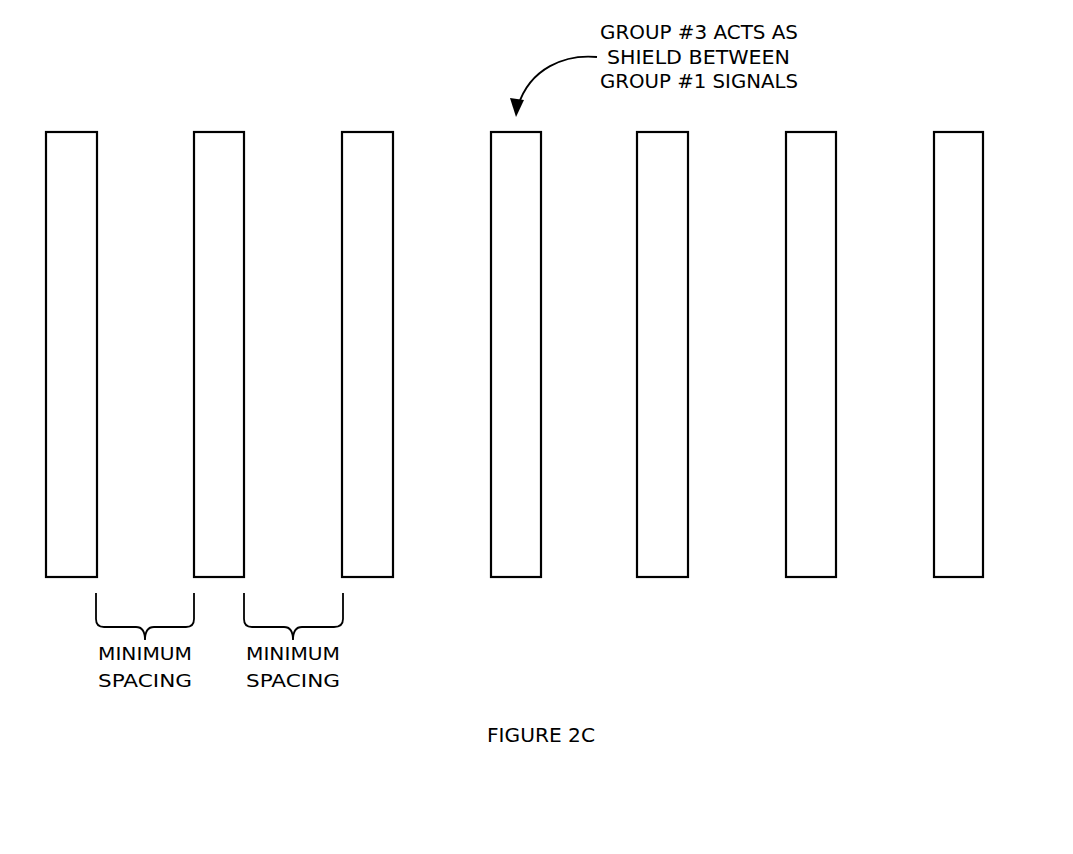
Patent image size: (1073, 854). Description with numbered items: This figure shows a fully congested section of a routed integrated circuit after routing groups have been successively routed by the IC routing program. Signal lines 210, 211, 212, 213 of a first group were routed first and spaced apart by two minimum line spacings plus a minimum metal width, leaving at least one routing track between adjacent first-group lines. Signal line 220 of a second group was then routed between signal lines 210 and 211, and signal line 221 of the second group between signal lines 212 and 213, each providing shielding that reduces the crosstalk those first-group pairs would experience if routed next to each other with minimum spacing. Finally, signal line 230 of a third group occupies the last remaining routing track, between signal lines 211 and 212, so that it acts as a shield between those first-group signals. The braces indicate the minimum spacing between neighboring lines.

The signal line of the first group 210 is at (97, 178).
The signal line of the second group 220 is at (244, 178).
The signal line of the first group 211 is at (393, 178).
The signal line of the third group 230 is at (541, 232).
The signal line of the first group 212 is at (688, 178).
The signal line of the second group 221 is at (836, 178).
The signal line of the first group 213 is at (983, 178).